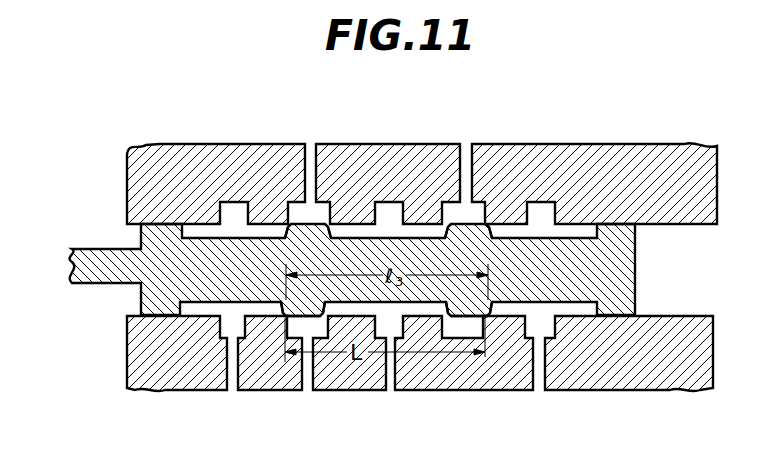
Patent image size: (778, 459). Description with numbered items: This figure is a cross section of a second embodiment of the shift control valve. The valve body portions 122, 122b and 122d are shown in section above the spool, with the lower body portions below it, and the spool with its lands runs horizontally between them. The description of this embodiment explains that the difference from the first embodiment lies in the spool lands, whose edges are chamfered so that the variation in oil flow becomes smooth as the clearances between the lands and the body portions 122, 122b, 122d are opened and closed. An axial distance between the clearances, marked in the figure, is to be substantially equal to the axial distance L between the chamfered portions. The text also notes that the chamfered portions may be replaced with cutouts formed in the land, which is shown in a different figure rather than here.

The upper die segment 122 is at (203, 230).
The upper die segment 122b is at (327, 212).
The upper die segment 122d is at (480, 204).